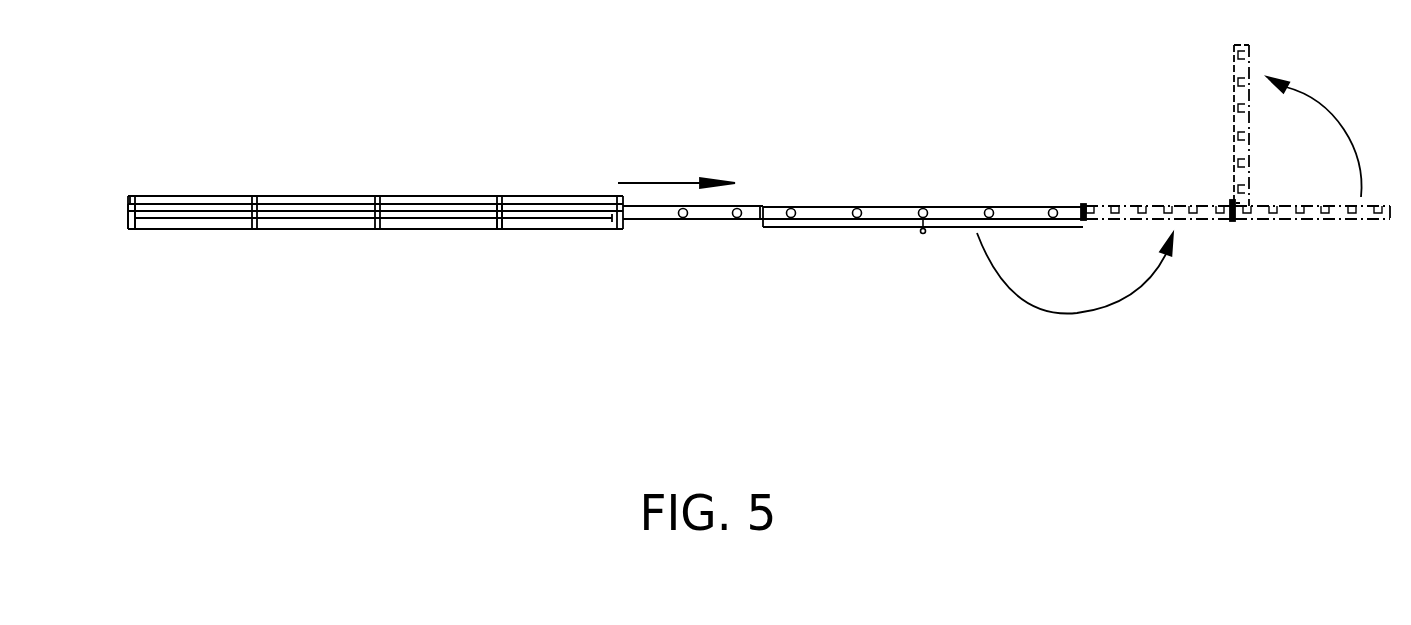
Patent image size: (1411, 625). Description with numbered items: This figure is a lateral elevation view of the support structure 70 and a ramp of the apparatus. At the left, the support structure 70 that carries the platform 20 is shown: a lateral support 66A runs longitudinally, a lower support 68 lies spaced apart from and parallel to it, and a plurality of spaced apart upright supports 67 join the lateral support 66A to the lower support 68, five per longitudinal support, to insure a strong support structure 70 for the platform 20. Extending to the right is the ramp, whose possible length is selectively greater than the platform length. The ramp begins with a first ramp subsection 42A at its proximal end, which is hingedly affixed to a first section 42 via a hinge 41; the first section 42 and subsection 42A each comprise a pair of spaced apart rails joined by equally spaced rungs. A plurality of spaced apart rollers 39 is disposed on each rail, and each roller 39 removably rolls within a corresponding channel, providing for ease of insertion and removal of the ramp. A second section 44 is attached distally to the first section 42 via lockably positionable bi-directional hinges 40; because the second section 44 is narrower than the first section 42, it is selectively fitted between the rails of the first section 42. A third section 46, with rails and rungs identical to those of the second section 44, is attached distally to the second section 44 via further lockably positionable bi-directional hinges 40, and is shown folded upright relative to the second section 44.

The platform 20 is at (205, 196).
The upright supports 67 is at (128, 215).
The lower supports 68 is at (302, 229).
The lateral supports 66A is at (575, 212).
The support structure 70 is at (543, 189).
The first ramp subsection 42A is at (682, 230).
The rollers 39 is at (685, 219).
The hinge 41 is at (765, 207).
The first section 42 is at (875, 198).
The lockably positionable bi-directional hinges 40 is at (1232, 206).
The second section 44 is at (1207, 240).
The third section 46 is at (1358, 227).